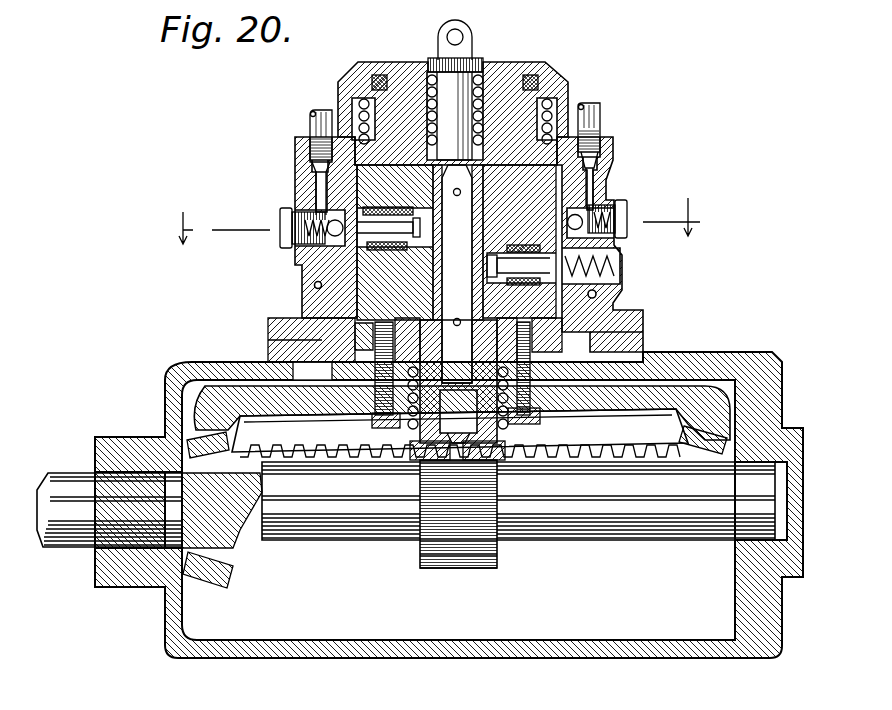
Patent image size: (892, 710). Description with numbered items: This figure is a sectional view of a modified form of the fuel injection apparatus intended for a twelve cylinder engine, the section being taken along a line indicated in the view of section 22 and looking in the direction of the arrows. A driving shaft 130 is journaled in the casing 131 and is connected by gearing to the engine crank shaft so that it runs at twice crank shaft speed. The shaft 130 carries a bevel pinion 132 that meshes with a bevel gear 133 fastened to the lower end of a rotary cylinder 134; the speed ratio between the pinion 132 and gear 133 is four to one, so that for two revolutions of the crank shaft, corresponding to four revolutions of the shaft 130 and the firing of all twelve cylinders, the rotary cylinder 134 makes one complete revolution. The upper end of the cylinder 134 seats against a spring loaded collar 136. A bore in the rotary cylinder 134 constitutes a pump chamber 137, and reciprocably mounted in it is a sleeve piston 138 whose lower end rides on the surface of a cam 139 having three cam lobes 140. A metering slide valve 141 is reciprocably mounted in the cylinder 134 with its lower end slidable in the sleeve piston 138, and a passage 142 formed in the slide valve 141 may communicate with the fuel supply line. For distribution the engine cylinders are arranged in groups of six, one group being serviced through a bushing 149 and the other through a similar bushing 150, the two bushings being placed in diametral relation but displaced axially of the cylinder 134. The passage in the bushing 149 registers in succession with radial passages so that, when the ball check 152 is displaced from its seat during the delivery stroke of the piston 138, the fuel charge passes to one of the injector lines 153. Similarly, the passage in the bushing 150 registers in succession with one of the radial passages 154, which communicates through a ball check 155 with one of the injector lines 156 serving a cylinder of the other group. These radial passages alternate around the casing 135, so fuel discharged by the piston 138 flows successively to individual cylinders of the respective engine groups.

The driving shaft 130 is at (372, 538).
The casing 131 is at (345, 650).
The bevel pinion 132 is at (227, 577).
The bevel gear 133 is at (362, 452).
The rotary cylinder 134 is at (368, 311).
The casing 135 is at (310, 275).
The spring loaded collar 136 is at (403, 66).
The pump chamber 137 is at (481, 222).
The sleeve piston 138 is at (497, 470).
The cam 139 is at (420, 558).
The cam lobes 140 is at (488, 563).
The metering slide valve 141 is at (478, 57).
The passage 142 is at (457, 276).
The bushing 149 is at (522, 244).
The bushing 150 is at (390, 208).
The ball check 152 is at (613, 290).
The injector lines 153 is at (630, 228).
The radial passages 154 is at (657, 249).
The ball check 155 is at (318, 222).
The injector lines 156 is at (311, 118).
The section line 22- 22 is at (437, 221).